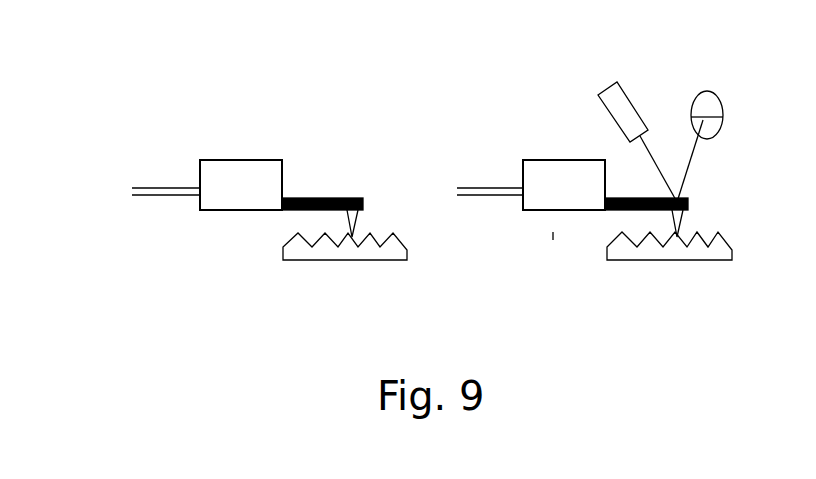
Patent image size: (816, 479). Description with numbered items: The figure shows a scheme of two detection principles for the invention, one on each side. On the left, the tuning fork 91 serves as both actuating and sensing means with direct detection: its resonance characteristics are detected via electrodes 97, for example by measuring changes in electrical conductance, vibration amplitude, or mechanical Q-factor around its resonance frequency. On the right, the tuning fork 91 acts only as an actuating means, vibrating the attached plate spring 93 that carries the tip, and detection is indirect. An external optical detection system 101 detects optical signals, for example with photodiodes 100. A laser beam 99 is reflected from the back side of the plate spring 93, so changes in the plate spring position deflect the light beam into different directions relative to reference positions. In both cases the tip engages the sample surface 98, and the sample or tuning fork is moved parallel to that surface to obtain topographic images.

The tuning fork 91 is at (538, 173).
The plate spring 93 is at (363, 207).
The electrodes 97 is at (153, 187).
The sample surface 98 is at (280, 248).
The laser beam 99 is at (645, 155).
The photodiodes 100 is at (723, 132).
The external optical detection system 101 is at (685, 68).